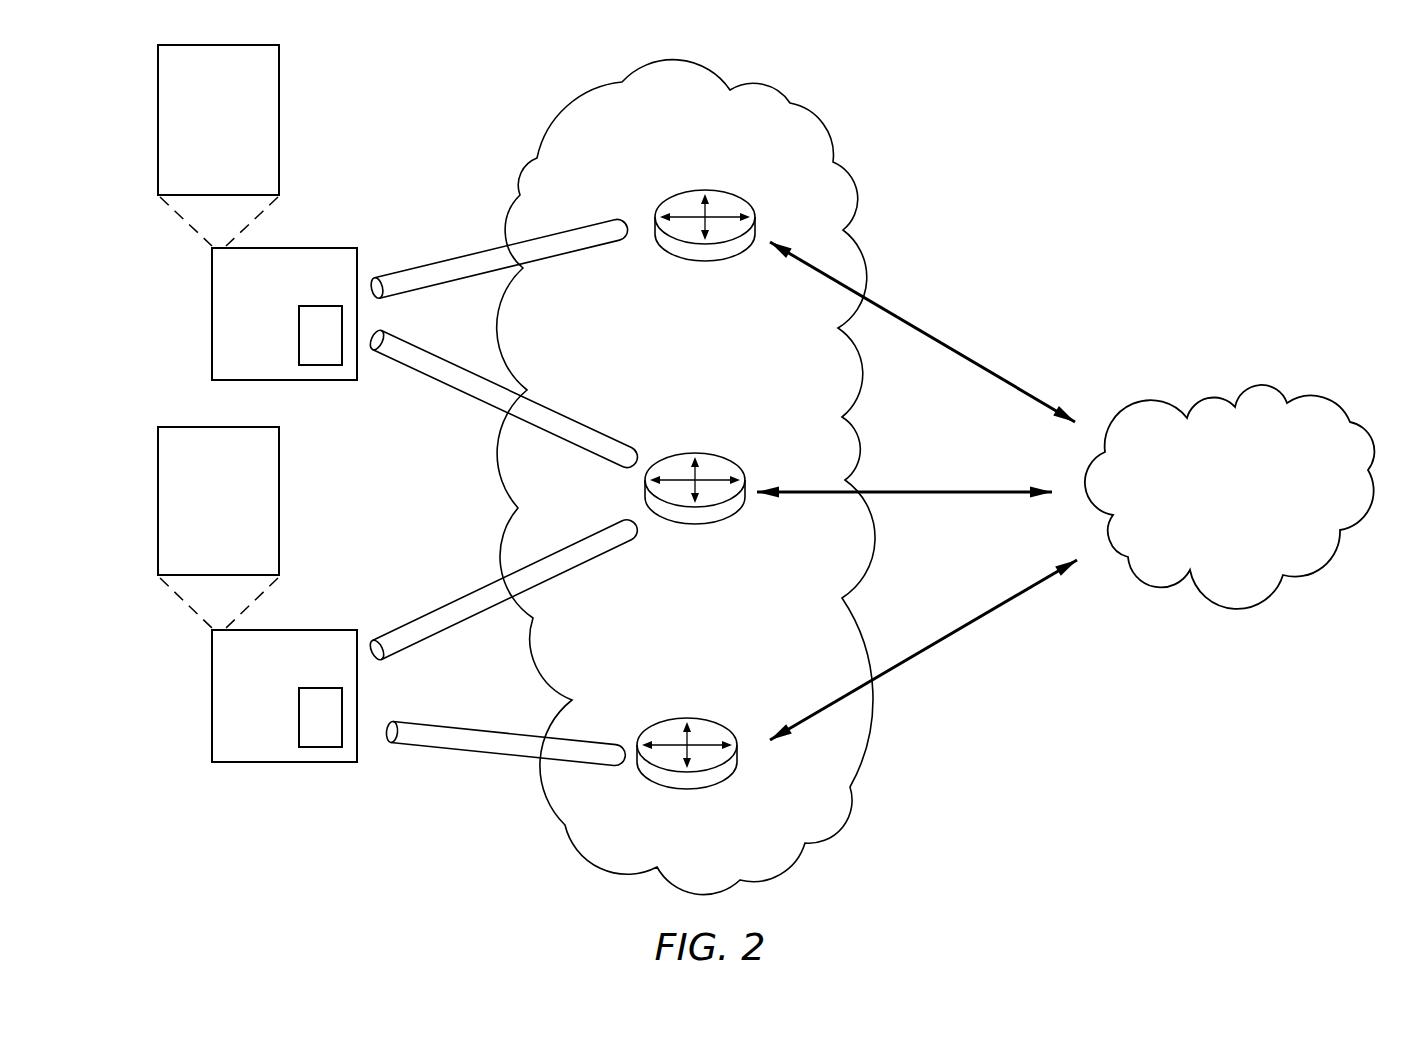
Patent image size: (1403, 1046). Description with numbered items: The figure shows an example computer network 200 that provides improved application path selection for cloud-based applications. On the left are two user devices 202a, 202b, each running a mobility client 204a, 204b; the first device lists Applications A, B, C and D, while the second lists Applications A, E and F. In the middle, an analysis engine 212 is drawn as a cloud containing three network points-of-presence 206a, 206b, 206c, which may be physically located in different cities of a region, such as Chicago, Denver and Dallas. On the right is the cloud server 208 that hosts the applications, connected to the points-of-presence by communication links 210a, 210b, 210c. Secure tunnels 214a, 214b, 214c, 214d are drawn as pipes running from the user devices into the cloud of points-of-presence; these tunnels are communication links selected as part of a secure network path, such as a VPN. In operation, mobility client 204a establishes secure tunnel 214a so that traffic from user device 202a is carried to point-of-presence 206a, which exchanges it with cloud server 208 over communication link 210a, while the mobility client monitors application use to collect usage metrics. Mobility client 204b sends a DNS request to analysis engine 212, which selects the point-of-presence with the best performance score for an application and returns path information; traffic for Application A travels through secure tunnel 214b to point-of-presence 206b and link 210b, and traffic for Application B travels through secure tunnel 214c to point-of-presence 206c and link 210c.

The network 200 is at (1090, 172).
The user device 202a is at (296, 212).
The user device 202b is at (235, 622).
The mobility client 204a is at (342, 314).
The mobility client 204b is at (325, 748).
The network point-of-presence 206a is at (707, 261).
The network point-of-presence 206b is at (708, 526).
The network point-of-presence 206c is at (710, 790).
The cloud server 208 is at (1217, 513).
The communication link 210a is at (885, 302).
The communication link 210b is at (903, 490).
The communication link 210c is at (935, 640).
The analysis engine 212 is at (648, 124).
The secure tunnel 214a is at (457, 256).
The secure tunnel 214b is at (472, 398).
The secure tunnel 214c is at (470, 592).
The connection pipe 214d is at (469, 754).